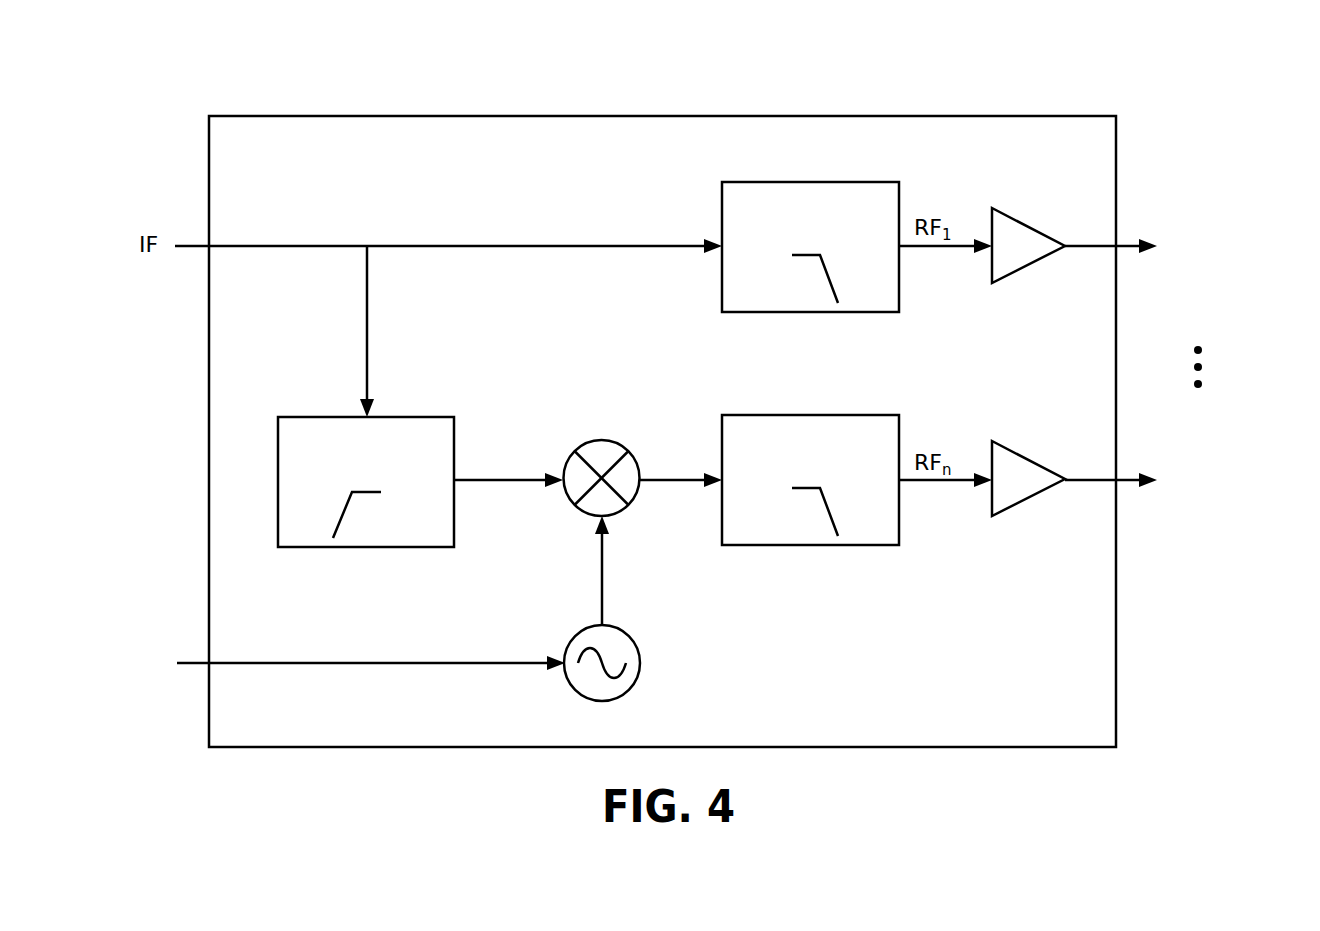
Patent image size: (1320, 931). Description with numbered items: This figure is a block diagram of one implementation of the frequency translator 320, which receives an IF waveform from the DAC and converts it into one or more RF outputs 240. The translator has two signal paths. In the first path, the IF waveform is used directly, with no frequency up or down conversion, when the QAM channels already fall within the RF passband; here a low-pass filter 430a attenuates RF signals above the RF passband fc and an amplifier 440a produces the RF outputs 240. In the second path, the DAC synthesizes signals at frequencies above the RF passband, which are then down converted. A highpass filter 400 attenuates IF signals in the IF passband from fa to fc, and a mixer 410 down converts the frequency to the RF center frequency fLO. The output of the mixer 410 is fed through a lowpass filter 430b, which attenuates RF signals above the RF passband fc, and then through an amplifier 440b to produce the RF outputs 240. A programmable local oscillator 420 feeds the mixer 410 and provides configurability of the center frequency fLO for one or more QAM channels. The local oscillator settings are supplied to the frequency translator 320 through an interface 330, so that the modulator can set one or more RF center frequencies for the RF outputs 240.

The frequency translator 320 is at (1106, 736).
The highpass filter 400 is at (417, 417).
The mixer 410 is at (603, 440).
The programmable local oscillator 420 is at (622, 623).
The low-pass filter 430a is at (810, 182).
The lowpass filter 430b is at (810, 415).
The amplifier 440a is at (1030, 220).
The amplifier 440b is at (1030, 453).
The interface 330 is at (343, 663).
The RF outputs 240 is at (1213, 525).